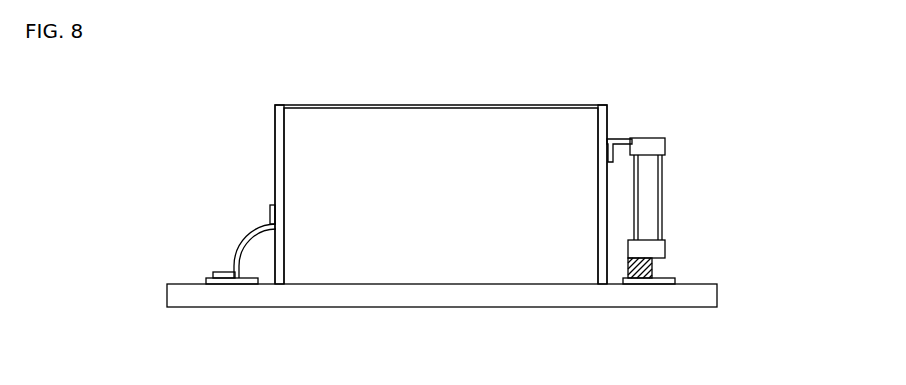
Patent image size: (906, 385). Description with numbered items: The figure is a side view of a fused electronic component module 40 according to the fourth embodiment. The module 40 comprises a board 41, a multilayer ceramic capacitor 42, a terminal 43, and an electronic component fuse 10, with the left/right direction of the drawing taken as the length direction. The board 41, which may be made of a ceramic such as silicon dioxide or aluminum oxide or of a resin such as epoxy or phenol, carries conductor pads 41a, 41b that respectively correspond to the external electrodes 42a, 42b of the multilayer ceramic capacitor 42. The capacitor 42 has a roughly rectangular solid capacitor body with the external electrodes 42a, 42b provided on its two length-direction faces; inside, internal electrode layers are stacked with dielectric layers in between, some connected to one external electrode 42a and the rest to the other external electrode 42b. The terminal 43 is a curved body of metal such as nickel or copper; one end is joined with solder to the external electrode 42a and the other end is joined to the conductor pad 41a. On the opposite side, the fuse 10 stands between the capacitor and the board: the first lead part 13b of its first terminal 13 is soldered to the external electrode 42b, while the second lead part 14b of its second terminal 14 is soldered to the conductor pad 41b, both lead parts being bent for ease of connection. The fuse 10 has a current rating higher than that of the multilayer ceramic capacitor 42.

The electronic component fuse 10 is at (660, 188).
The first terminal 13 is at (660, 147).
The first lead part 13b is at (617, 140).
The second terminal 14 is at (660, 248).
The second lead part 14b is at (636, 266).
The fused electronic component module 40 is at (425, 211).
The board 41 is at (362, 298).
The conductor pad 41a is at (226, 286).
The conductor pad 41b is at (642, 296).
The multilayer ceramic capacitor 42 is at (438, 173).
The external electrode 42a is at (277, 105).
The external electrode 42b is at (606, 106).
The terminal 43 is at (243, 236).